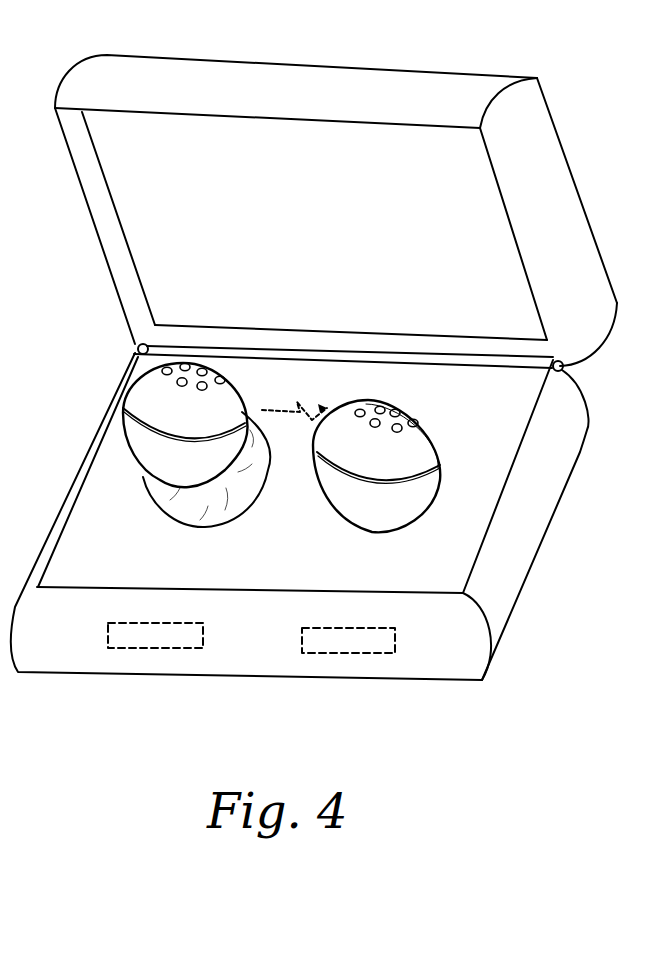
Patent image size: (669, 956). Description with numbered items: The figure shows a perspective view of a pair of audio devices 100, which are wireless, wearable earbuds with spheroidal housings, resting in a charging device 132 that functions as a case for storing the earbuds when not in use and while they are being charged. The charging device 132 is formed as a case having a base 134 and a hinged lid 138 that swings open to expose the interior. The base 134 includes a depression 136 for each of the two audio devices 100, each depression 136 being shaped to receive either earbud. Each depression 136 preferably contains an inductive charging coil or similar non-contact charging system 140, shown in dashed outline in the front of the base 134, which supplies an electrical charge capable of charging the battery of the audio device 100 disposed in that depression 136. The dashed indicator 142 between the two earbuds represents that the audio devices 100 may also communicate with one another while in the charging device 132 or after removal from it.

The audio device 100 is at (135, 457).
The charging device 132 is at (78, 181).
The base 134 is at (580, 452).
The depression 136 is at (242, 515).
The hinged lid 138 is at (493, 76).
The inductive charging coil 140 is at (177, 648).
The communication between audio devices 142 is at (313, 403).